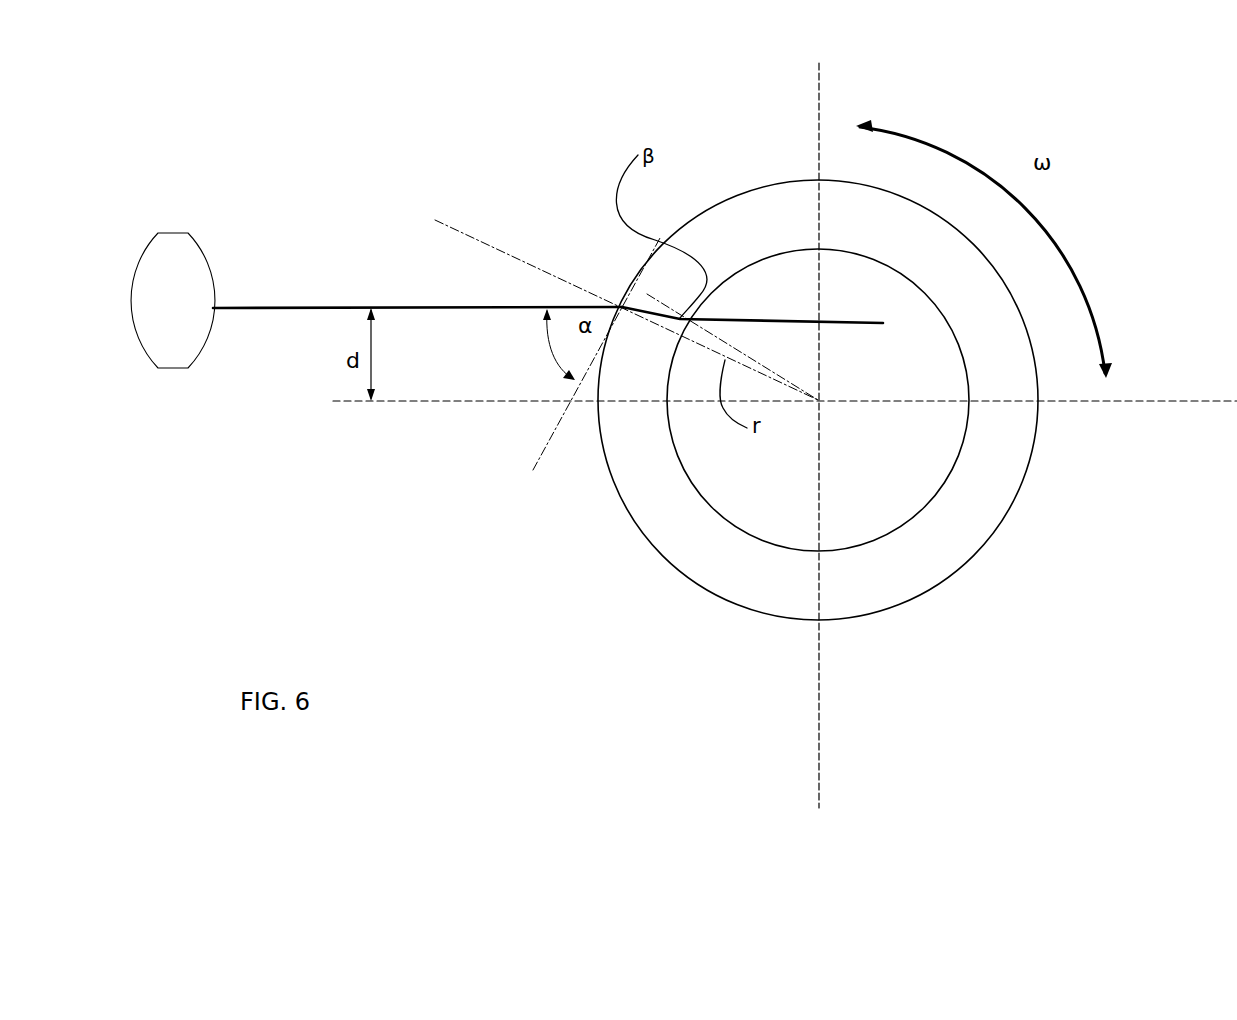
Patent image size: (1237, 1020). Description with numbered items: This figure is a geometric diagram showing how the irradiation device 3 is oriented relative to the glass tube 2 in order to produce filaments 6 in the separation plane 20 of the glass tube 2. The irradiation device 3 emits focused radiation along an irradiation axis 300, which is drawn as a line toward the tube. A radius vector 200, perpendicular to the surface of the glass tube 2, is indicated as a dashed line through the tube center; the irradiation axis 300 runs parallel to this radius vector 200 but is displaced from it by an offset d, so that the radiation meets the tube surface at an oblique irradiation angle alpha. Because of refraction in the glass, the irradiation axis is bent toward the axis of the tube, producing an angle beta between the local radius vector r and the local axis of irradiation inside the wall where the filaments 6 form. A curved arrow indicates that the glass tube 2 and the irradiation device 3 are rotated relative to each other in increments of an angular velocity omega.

The glass tube 2 is at (997, 528).
The separation plane 20 is at (766, 609).
The irradiation device 3 is at (170, 347).
The irradiation axis 300 is at (437, 307).
The filaments 6 is at (648, 308).
The radius vector 200 is at (447, 402).